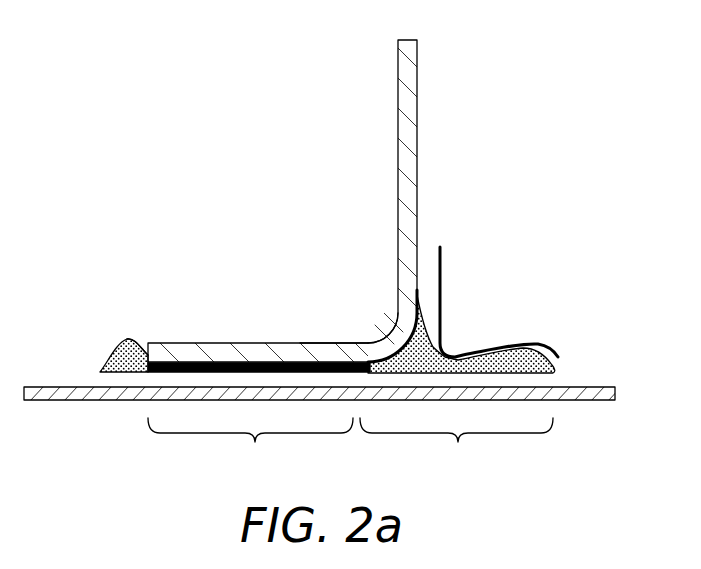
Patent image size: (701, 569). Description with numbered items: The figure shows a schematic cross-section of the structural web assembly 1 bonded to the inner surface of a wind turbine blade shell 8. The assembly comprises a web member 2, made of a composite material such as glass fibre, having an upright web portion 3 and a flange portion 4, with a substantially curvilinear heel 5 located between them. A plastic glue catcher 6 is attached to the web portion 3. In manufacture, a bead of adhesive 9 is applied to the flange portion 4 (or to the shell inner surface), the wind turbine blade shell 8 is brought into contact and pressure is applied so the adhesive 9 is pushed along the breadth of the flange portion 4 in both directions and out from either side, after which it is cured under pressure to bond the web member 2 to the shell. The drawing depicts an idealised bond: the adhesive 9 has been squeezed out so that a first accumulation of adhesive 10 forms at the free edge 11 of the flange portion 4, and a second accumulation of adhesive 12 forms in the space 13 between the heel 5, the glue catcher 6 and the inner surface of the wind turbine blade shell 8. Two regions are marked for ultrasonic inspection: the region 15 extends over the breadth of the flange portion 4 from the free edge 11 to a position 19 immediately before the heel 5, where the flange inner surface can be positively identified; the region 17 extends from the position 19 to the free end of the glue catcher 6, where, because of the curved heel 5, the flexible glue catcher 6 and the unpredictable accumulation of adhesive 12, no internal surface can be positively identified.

The structural web assembly 1 is at (178, 138).
The web member 2 is at (306, 201).
The web portion 3 is at (398, 128).
The flange portion 4 is at (262, 350).
The heel 5 is at (391, 337).
The glue catcher 6 is at (529, 343).
The wind turbine blade shell 8 is at (596, 387).
The adhesive 9 is at (198, 368).
The first accumulation of adhesive 10 is at (105, 352).
The free edge 11 is at (138, 343).
The second accumulation of adhesive 12 is at (433, 347).
The space 13 is at (417, 328).
The region 15 is at (250, 446).
The region 17 is at (456, 446).
The position 19 is at (363, 342).